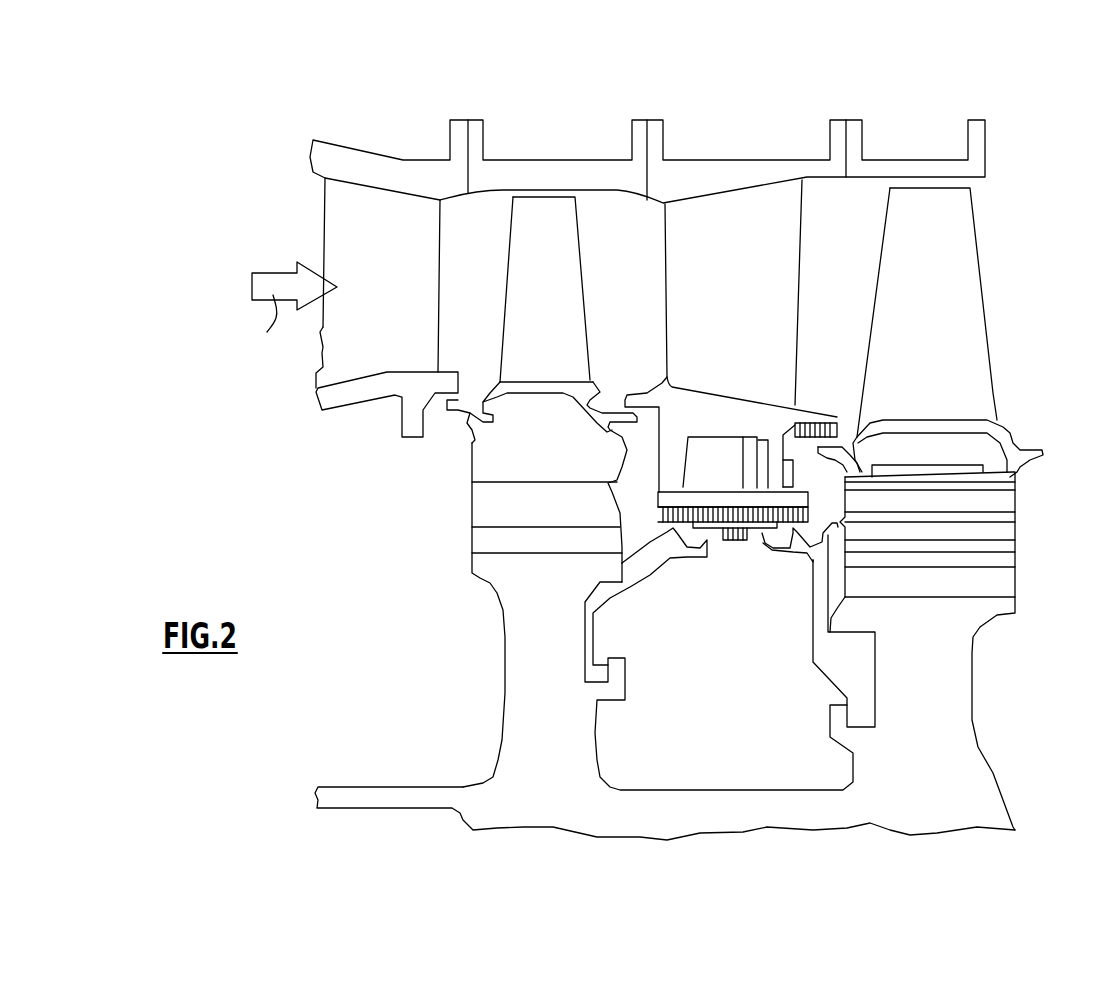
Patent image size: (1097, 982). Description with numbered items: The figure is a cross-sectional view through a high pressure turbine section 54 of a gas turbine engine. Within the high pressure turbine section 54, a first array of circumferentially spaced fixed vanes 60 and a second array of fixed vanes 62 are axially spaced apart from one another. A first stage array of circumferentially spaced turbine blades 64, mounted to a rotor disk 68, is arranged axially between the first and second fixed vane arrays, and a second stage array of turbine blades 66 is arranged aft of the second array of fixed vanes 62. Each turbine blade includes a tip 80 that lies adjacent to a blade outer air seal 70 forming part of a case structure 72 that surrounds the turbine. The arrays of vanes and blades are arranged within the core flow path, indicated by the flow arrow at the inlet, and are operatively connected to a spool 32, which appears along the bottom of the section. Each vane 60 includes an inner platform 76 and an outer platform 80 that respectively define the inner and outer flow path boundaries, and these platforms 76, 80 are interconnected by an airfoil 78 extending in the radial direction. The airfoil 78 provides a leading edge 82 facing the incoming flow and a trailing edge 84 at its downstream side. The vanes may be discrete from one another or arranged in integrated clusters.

The spool 32 is at (316, 799).
The high pressure turbine section 54 is at (756, 104).
The first array of fixed vanes 60 is at (314, 256).
The second array of fixed vanes 62 is at (666, 248).
The first stage turbine blades 64 is at (506, 269).
The second stage turbine blades 66 is at (874, 278).
The rotor disk 68 is at (577, 730).
The blade outer air seal 70 is at (500, 177).
The case structure 72 is at (640, 138).
The inner platform 76 is at (343, 393).
The airfoil 78 is at (353, 228).
The outer platform 80 is at (353, 168).
The leading edge 82 is at (322, 327).
The trailing edge 84 is at (443, 267).